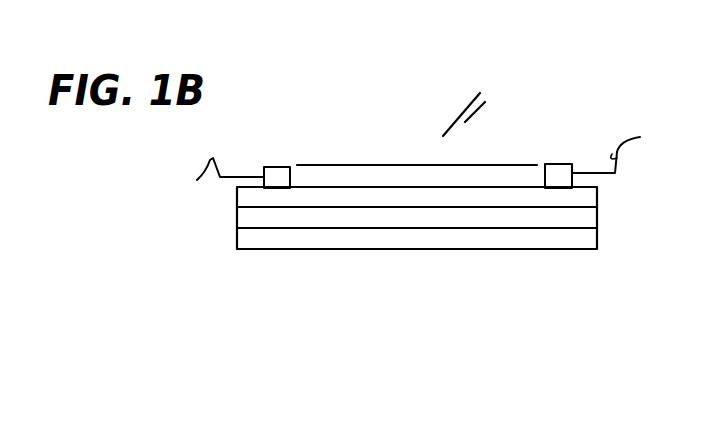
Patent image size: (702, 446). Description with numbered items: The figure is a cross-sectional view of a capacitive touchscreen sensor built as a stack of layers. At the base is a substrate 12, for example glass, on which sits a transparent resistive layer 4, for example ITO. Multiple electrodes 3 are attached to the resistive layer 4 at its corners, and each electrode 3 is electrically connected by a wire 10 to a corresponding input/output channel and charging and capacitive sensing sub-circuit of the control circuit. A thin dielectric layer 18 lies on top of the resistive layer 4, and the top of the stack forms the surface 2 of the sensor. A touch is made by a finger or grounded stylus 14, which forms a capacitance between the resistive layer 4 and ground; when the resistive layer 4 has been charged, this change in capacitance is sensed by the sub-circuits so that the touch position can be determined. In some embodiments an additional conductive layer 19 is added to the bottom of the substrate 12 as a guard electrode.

The surface 2 is at (387, 163).
The electrodes 3 is at (281, 167).
The resistive layer 4 is at (590, 195).
The wire 10 is at (197, 180).
The substrate 12 is at (590, 215).
The finger or grounded stylus 14 is at (465, 122).
The thin dielectric layer 18 is at (362, 166).
The additional conductive layer 19 is at (590, 236).